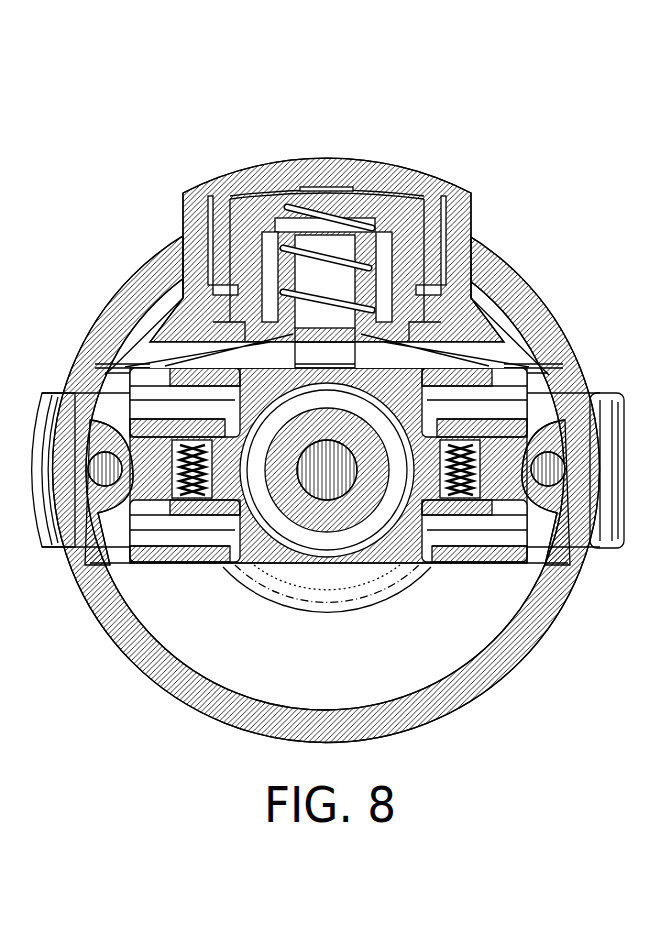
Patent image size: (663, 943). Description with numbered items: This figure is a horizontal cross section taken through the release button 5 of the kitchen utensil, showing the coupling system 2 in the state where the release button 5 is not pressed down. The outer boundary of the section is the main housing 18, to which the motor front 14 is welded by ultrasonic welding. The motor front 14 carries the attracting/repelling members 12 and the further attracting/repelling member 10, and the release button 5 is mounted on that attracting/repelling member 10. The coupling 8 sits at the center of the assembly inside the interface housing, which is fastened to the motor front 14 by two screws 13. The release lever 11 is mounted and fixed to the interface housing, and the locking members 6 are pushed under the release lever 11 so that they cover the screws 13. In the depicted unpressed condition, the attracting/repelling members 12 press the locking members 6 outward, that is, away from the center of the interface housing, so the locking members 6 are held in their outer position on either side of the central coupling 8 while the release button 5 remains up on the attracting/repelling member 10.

The coupling system 2 is at (380, 130).
The release button 5 is at (233, 182).
The locking members 6 is at (620, 433).
The coupling 8 is at (333, 510).
The attracting/repelling member 10 is at (350, 263).
The release lever 11 is at (250, 247).
The attracting/repelling members 12 is at (197, 466).
The screws 13 is at (558, 483).
The motor front 14 is at (262, 565).
The main housing 18 is at (137, 643).